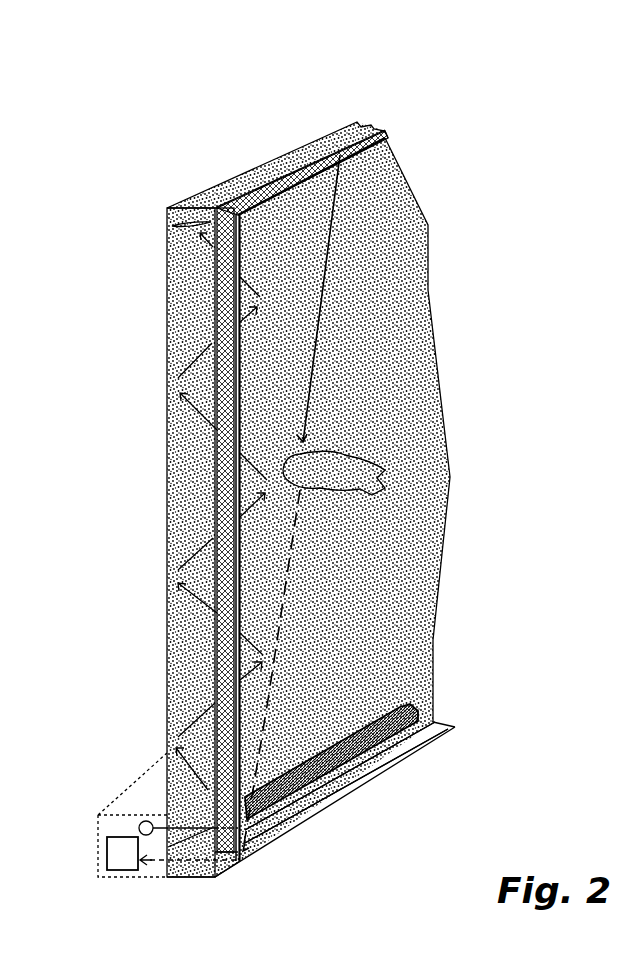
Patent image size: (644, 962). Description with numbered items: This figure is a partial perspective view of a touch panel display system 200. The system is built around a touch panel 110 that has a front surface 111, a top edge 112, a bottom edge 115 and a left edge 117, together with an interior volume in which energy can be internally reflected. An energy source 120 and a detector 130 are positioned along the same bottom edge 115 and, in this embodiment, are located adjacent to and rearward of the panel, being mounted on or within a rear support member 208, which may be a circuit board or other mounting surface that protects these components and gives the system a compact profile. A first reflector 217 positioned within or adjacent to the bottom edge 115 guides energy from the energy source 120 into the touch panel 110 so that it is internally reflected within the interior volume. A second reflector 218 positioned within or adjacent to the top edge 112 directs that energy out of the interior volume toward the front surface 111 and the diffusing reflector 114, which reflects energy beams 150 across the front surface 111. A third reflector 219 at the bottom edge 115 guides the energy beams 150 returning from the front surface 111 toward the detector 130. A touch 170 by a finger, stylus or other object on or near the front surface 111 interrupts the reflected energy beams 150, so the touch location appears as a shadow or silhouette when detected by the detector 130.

The touch panel display system 200 is at (500, 70).
The touch panel 110 is at (393, 197).
The front surface 111 is at (398, 378).
The top edge 112 is at (236, 182).
The diffusing reflector 114 is at (310, 155).
The bottom edge 115 is at (216, 885).
The left edge 117 is at (180, 467).
The energy beams 150 is at (331, 267).
The touch 170 is at (307, 445).
The rear support member 208 is at (148, 778).
The energy source 120 is at (147, 820).
The detector 130 is at (107, 860).
The first reflector 217 is at (363, 735).
The second reflector 218 is at (197, 220).
The third reflector 219 is at (333, 792).